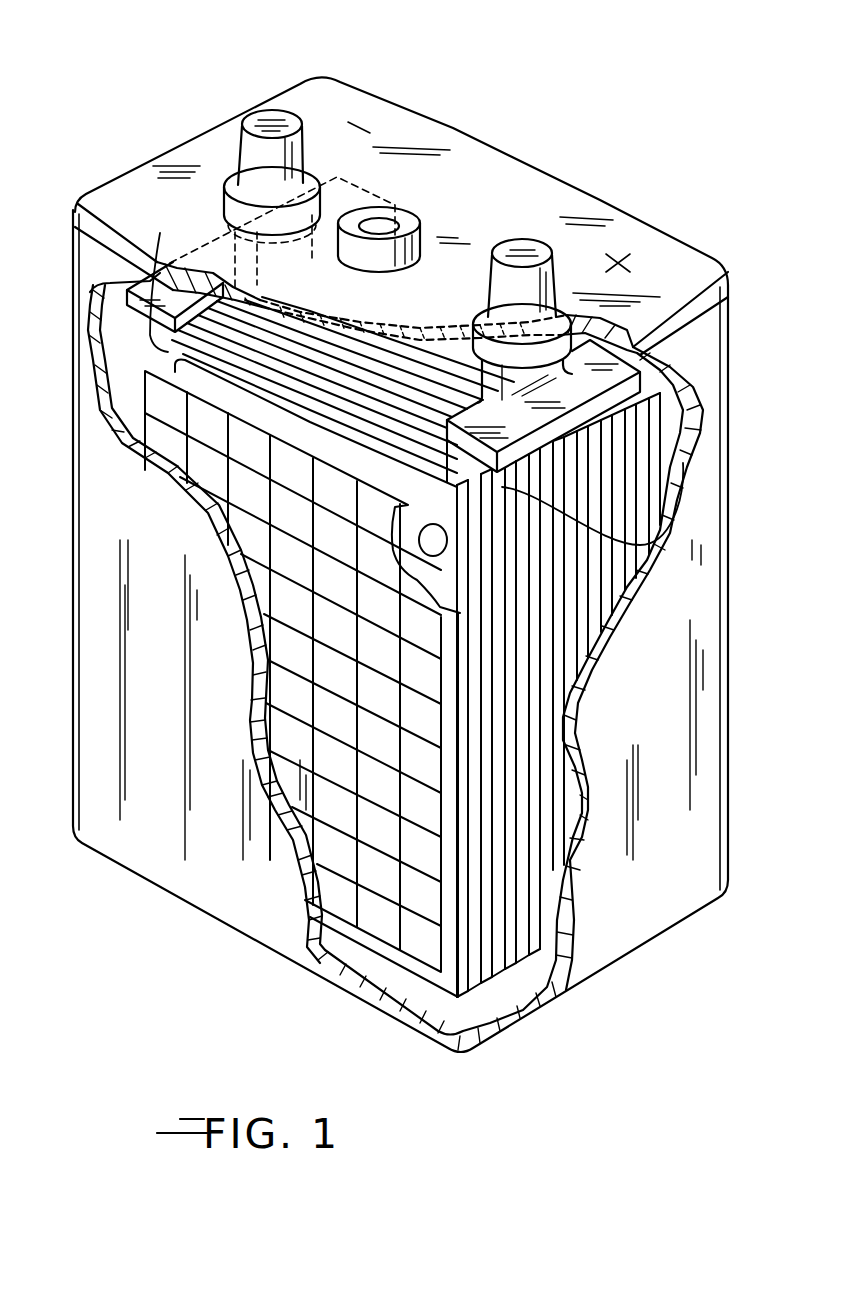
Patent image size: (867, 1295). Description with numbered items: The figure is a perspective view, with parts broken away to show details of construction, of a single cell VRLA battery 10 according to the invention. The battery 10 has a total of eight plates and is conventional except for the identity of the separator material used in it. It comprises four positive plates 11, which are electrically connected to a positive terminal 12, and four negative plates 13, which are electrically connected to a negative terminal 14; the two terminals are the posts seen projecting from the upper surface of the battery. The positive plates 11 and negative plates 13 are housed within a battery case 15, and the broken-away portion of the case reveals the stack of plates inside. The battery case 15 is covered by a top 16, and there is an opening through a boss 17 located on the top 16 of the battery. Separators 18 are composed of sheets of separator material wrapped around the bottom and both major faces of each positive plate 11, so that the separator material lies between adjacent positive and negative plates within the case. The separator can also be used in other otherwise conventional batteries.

The battery 10 is at (474, 100).
The positive plates 11 is at (570, 443).
The positive terminal 12 is at (542, 242).
The negative plates 13 is at (248, 322).
The negative terminal 14 is at (270, 118).
The battery case 15 is at (127, 873).
The top 16 is at (728, 285).
The boss 17 is at (405, 215).
The separators 18 is at (503, 977).